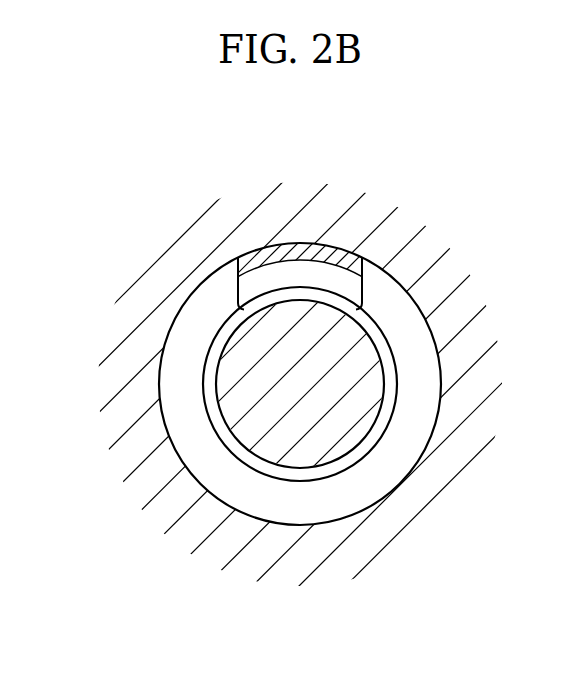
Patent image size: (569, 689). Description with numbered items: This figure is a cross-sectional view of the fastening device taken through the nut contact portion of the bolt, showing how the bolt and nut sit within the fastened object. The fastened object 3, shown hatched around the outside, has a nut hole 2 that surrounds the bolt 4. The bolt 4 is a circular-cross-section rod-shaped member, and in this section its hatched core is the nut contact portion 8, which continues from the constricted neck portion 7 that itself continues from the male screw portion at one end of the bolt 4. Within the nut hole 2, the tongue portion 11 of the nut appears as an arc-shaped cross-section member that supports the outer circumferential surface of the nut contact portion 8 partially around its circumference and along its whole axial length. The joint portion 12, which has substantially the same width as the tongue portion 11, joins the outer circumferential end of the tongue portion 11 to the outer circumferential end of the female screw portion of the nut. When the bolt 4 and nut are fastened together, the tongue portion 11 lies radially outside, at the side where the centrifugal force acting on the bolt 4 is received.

The nut hole 2 is at (157, 388).
The fastened object 3 is at (182, 270).
The bolt 4 is at (287, 450).
The neck portion 7 is at (353, 447).
The nut contact portion 8 is at (397, 398).
The tongue portion 11 is at (348, 287).
The joint portion 12 is at (338, 250).